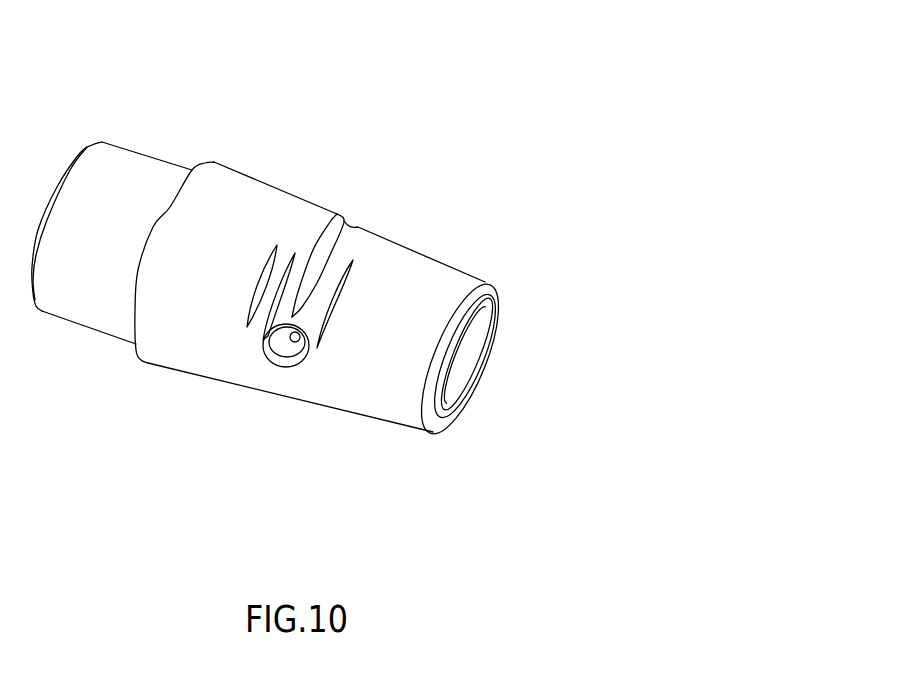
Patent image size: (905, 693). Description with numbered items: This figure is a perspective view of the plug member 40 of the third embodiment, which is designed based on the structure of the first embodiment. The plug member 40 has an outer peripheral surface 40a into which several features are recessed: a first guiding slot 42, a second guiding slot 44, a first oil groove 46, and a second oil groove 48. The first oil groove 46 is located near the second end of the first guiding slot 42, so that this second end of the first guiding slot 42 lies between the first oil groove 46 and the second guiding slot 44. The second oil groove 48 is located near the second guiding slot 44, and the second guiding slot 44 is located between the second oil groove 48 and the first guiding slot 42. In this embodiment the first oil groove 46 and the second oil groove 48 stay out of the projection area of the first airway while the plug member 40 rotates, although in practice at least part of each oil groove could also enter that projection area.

The plug member 40 is at (541, 166).
The outer peripheral surface 40a is at (220, 187).
The first guiding slot 42 is at (328, 218).
The second guiding slot 44 is at (283, 262).
The first oil groove 46 is at (333, 315).
The second oil groove 48 is at (253, 290).